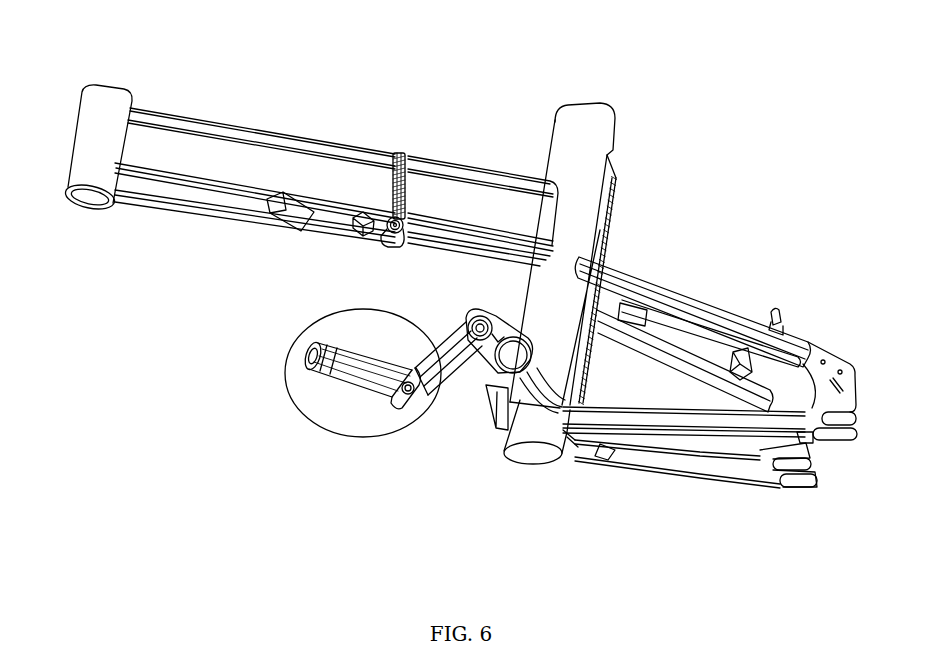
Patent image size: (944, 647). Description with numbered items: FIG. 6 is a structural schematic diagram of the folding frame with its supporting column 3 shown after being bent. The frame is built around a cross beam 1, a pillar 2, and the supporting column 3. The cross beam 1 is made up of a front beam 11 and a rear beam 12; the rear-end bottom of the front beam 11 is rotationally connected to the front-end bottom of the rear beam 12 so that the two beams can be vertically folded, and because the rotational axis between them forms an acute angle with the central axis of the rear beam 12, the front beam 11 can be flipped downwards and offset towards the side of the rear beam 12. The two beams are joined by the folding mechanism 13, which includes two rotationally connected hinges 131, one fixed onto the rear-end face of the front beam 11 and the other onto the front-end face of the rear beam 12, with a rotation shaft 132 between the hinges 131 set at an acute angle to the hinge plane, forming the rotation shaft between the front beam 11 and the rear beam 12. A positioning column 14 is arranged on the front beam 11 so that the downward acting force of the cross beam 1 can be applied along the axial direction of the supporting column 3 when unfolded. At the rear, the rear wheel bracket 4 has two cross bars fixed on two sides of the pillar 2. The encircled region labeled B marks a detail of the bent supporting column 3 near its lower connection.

The cross beam 1 is at (405, 76).
The front beam 11 is at (267, 158).
The rear beam 12 is at (478, 190).
The folding mechanism 13 is at (394, 265).
The hinge 131 is at (404, 155).
The rotation shaft 132 is at (384, 245).
The positioning column 14 is at (283, 218).
The pillar 2 is at (531, 457).
The supporting column 3 is at (410, 437).
The rear wheel bracket 4 is at (668, 488).
The detail region B is at (290, 400).